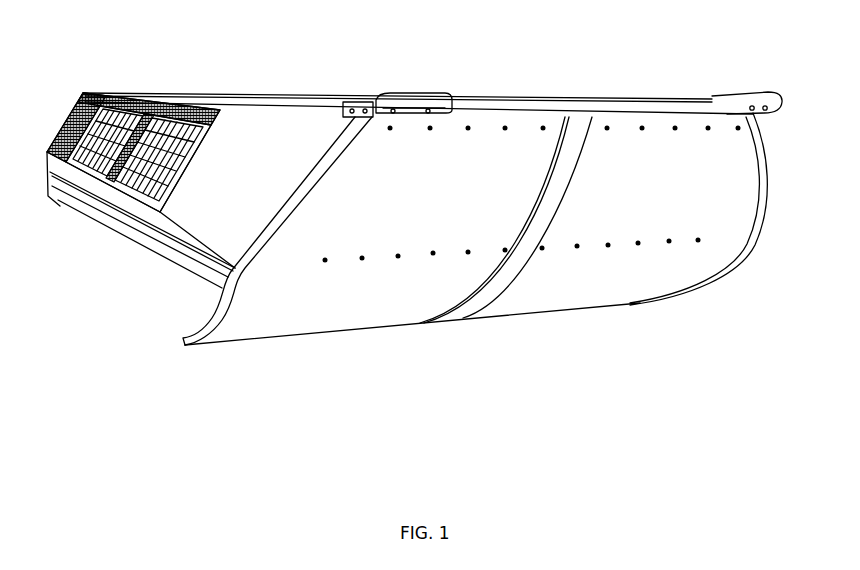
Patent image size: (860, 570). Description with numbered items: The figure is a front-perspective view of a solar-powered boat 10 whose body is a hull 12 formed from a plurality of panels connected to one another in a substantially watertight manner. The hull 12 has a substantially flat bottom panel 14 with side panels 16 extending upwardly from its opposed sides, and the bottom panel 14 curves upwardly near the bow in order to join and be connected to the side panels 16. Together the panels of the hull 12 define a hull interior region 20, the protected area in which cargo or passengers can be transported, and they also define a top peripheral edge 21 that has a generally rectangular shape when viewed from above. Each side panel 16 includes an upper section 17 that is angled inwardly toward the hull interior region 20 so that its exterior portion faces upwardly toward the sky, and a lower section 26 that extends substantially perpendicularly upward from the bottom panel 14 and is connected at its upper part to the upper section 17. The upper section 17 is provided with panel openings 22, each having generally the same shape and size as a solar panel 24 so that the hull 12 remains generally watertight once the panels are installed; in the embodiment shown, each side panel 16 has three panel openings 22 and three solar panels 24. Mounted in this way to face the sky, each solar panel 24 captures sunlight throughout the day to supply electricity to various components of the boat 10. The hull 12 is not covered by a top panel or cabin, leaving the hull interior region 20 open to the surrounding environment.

The solar-powered boat 10 is at (561, 371).
The hull 12 is at (293, 306).
The bottom panel 14 is at (421, 242).
The side panel 16 is at (163, 237).
The upper section 17 is at (213, 228).
The hull interior region 20 is at (290, 87).
The top peripheral edge 21 is at (262, 112).
The panel opening 22 is at (135, 210).
The solar panel 24 is at (125, 178).
The lower section 26 is at (146, 282).